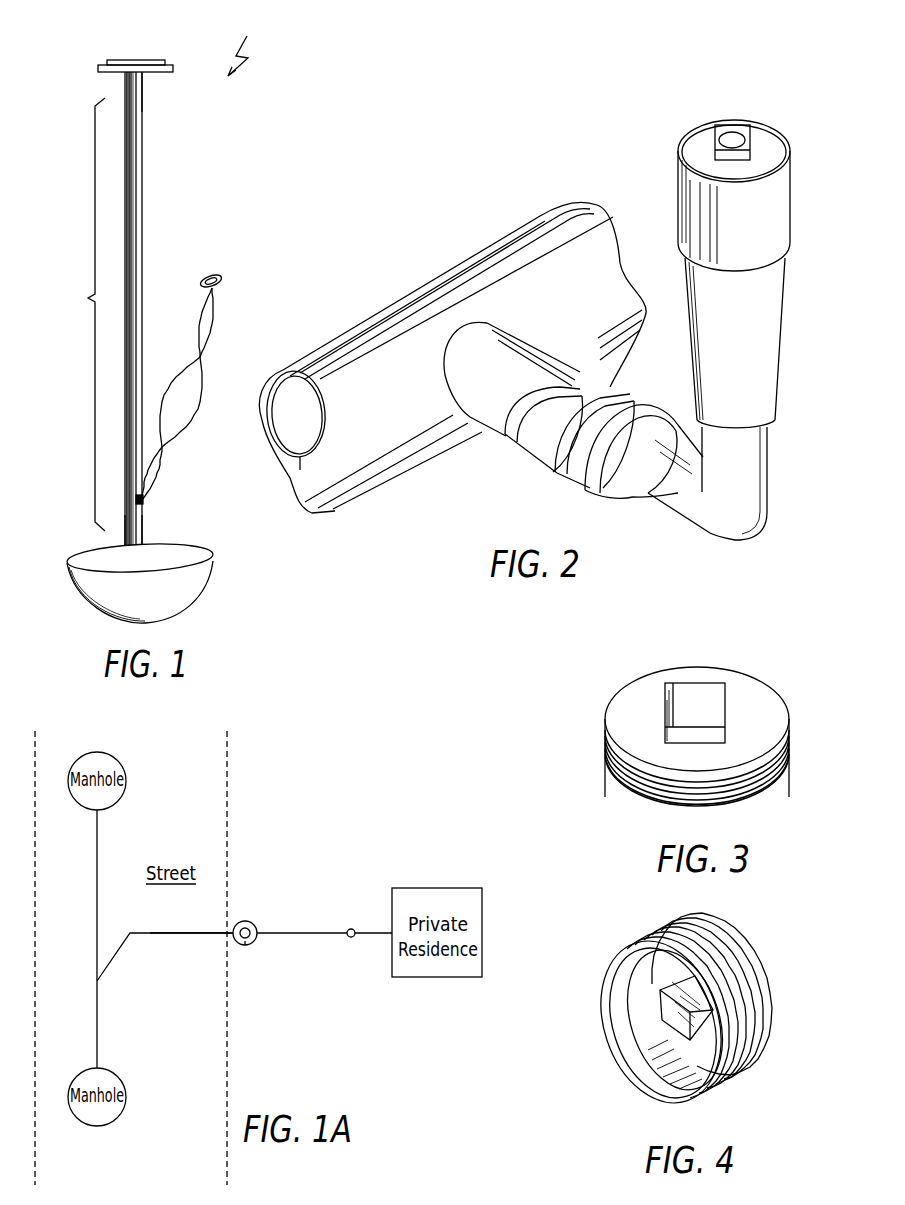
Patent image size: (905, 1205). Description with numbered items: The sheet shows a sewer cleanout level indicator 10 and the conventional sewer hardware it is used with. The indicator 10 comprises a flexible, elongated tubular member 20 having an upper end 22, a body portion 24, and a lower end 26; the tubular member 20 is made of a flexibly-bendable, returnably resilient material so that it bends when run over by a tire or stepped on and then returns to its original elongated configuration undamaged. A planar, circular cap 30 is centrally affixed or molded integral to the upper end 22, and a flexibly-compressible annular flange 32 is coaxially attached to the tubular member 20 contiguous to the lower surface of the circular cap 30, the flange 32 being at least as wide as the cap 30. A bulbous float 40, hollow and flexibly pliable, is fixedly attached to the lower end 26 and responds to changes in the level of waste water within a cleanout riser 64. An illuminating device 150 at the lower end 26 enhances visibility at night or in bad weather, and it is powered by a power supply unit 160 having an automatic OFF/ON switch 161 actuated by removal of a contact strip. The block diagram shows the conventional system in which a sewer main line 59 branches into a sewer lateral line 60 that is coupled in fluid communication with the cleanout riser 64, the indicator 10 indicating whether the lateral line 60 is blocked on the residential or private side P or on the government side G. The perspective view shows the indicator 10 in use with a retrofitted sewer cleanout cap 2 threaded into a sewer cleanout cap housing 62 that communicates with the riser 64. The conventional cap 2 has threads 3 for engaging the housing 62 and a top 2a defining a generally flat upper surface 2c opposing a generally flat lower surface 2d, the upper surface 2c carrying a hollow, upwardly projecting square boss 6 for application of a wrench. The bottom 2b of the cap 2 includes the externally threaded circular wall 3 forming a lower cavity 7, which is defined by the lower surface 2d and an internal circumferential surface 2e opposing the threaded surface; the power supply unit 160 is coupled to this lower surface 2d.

In FIG. 1, the sewer cleanout level indicator 10 is at (245, 44).
In FIG. 2, the sewer cleanout level indicator 10 is at (738, 137).
In FIG. 1A, the sewer cleanout level indicator 10 is at (253, 924).
In FIG. 1, the flexible, elongated tubular member 20 is at (143, 262).
In FIG. 1, the upper end 22 is at (126, 75).
In FIG. 1, the body portion 24 is at (79, 314).
In FIG. 1, the lower end 26 is at (145, 541).
In FIG. 1, the planar, circular cap 30 is at (147, 63).
In FIG. 1, the flexibly-compressible annular flange 32 is at (152, 74).
In FIG. 1, the bulbous float 40 is at (202, 582).
In FIG. 1, the illuminating device 150 is at (144, 498).
In FIG. 1, the power supply unit 160 is at (217, 276).
In FIG. 1, the automatic OFF/ON switch 161 is at (224, 283).
In FIG. 2, the sewer main line 59 is at (468, 269).
In FIG. 1A, the sewer main line 59 is at (95, 931).
In FIG. 2, the sewer lateral line 60 is at (548, 452).
In FIG. 1A, the sewer lateral line 60 is at (155, 935).
In FIG. 2, the sewer cleanout cap housing 62 is at (778, 210).
In FIG. 2, the cleanout riser 64 is at (683, 282).
In FIG. 1A, the cleanout riser 64 is at (248, 945).
In FIG. 2, the private side P is at (368, 450).
In FIG. 1A, the private side P is at (335, 931).
In FIG. 2, the government side G is at (637, 318).
In FIG. 1A, the government side G is at (205, 931).
In FIG. 3, the sewer cleanout cap 2 is at (802, 680).
In FIG. 4, the sewer cleanout cap 2 is at (737, 962).
In FIG. 3, the top 2a is at (638, 690).
In FIG. 4, the bottom 2b is at (708, 1095).
In FIG. 3, the upper surface 2c is at (743, 690).
In FIG. 4, the lower surface 2d is at (660, 1025).
In FIG. 4, the internal circumferential surface 2e is at (615, 968).
In FIG. 3, the threads 3 is at (786, 766).
In FIG. 4, the threads 3 is at (742, 1066).
In FIG. 3, the square boss 6 is at (676, 718).
In FIG. 4, the lower cavity 7 is at (624, 1017).